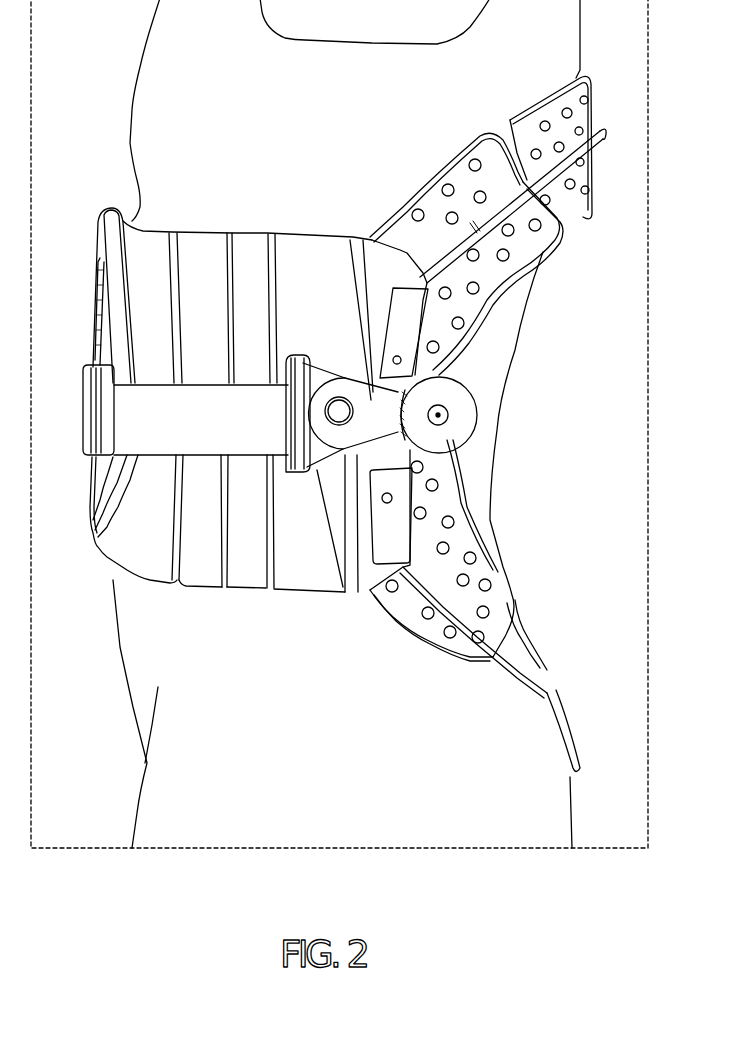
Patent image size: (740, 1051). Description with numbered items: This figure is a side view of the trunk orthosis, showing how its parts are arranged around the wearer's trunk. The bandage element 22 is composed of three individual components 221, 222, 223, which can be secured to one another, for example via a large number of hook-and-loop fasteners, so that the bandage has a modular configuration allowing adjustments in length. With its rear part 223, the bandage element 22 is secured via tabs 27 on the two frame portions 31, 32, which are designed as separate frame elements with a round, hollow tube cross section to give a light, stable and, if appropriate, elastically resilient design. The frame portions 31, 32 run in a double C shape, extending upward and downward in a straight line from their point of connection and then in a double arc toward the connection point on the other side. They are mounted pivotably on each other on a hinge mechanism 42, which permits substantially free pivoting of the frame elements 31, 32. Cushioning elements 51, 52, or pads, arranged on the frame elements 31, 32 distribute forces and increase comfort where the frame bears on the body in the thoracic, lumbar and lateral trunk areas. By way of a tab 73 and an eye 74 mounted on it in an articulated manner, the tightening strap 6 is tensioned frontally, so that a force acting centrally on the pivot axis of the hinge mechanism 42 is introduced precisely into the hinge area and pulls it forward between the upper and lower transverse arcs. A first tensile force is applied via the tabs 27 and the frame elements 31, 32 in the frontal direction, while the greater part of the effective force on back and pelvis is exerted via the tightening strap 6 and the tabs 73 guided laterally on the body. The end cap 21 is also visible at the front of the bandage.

The end cap of belt 21 is at (97, 247).
The bandage element 22 is at (130, 552).
The individual component 221 is at (151, 573).
The individual component 222 is at (203, 588).
The rear part 223 is at (302, 590).
The tightening strap 6 is at (140, 433).
The tab 73 is at (362, 300).
The eye 74 is at (345, 595).
The tab 27 is at (410, 320).
The hinge mechanism 42 is at (447, 410).
The frame portion 31 is at (605, 129).
The cushioning element 51 is at (590, 196).
The cushioning element 52 is at (480, 553).
The frame portion 32 is at (517, 660).